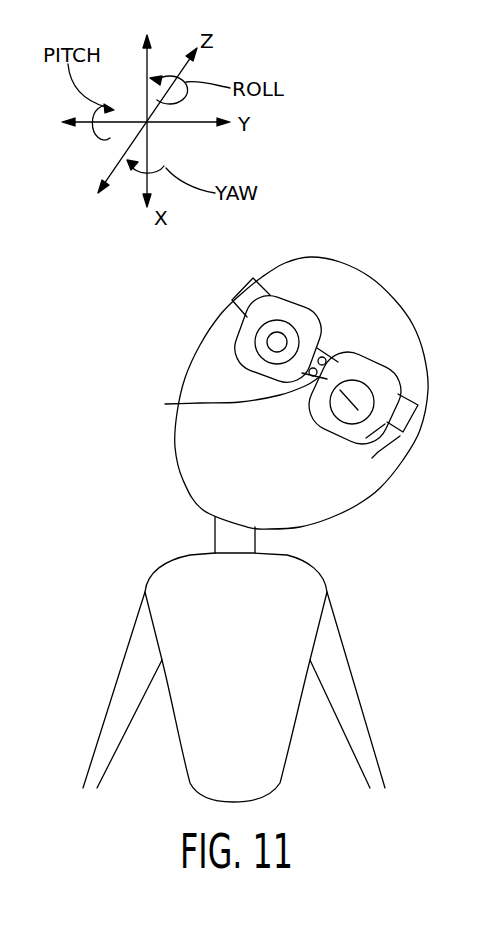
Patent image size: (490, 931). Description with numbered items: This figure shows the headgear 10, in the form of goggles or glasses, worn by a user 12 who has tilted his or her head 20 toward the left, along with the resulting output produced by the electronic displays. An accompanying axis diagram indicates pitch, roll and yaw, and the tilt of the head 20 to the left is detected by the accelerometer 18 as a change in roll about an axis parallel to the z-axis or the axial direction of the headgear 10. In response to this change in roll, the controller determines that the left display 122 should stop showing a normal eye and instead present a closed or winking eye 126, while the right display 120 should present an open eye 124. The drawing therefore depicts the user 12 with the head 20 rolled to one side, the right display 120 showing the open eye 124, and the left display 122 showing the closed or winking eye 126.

The headgear 10 is at (306, 363).
The user 12 is at (315, 568).
The accelerometer 18 is at (229, 398).
The head 20 is at (175, 437).
The right display 120 is at (237, 352).
The left display 122 is at (378, 452).
The open eye 124 is at (290, 322).
The closed or winking eye 126 is at (368, 382).